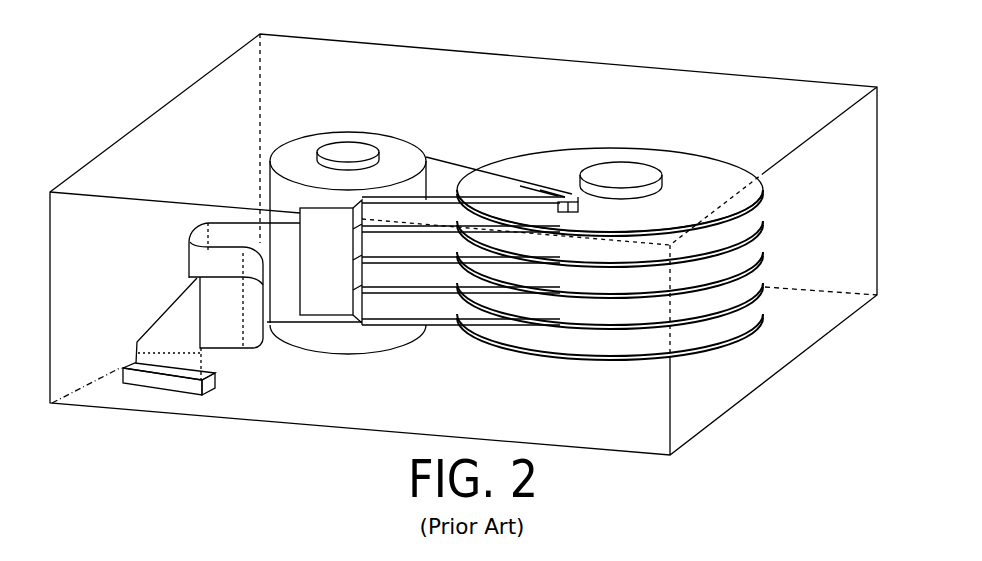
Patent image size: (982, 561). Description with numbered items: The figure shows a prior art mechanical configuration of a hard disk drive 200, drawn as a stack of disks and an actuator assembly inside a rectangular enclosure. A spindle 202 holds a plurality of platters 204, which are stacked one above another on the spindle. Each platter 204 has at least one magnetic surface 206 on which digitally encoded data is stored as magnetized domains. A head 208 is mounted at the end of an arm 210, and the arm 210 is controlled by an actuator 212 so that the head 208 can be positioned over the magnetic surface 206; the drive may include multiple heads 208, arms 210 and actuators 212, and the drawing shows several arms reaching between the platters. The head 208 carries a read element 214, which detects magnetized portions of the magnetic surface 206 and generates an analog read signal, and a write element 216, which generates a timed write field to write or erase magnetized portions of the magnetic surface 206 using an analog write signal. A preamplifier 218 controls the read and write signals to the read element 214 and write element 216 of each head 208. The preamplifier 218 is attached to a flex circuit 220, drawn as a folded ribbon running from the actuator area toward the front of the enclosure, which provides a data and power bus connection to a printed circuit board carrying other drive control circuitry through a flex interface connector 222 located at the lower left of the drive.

The hard disk drive 200 is at (126, 57).
The spindle 202 is at (620, 163).
The platter 204 is at (697, 153).
The magnetic surface 206 is at (650, 233).
The head 208 is at (578, 197).
The arm 210 is at (448, 173).
The actuator 212 is at (373, 137).
The read element 214 is at (565, 187).
The write element 216 is at (560, 190).
The preamplifier 218 is at (290, 208).
The flex circuit 220 is at (313, 316).
The flex interface connector 222 is at (153, 380).